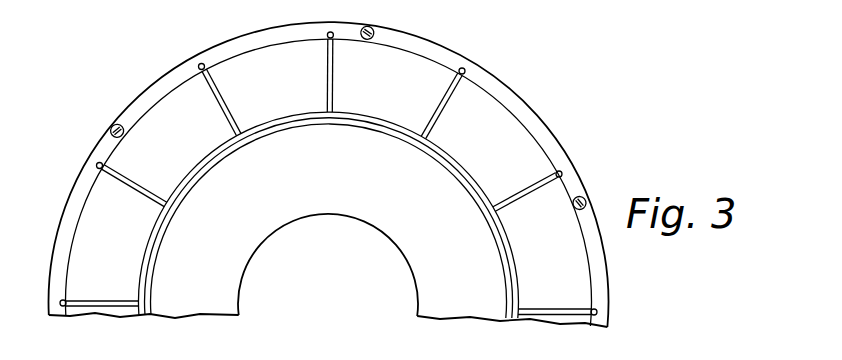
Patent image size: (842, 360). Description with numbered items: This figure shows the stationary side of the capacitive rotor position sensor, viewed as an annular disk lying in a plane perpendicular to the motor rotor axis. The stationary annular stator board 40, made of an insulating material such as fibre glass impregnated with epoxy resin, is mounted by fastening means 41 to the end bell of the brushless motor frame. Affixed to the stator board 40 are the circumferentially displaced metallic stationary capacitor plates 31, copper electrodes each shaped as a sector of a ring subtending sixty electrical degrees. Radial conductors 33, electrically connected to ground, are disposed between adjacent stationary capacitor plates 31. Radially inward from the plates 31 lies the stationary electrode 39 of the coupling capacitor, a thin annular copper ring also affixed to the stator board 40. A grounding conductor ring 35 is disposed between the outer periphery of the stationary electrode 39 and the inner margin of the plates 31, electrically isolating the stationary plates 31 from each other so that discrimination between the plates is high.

The stationary capacitor plates 31 is at (183, 162).
The radial conductors 33 is at (465, 69).
The grounding conductor ring 35 is at (468, 187).
The stationary electrode 39 is at (350, 191).
The stationary stator board 40 is at (527, 120).
The fastening means 41 is at (374, 29).